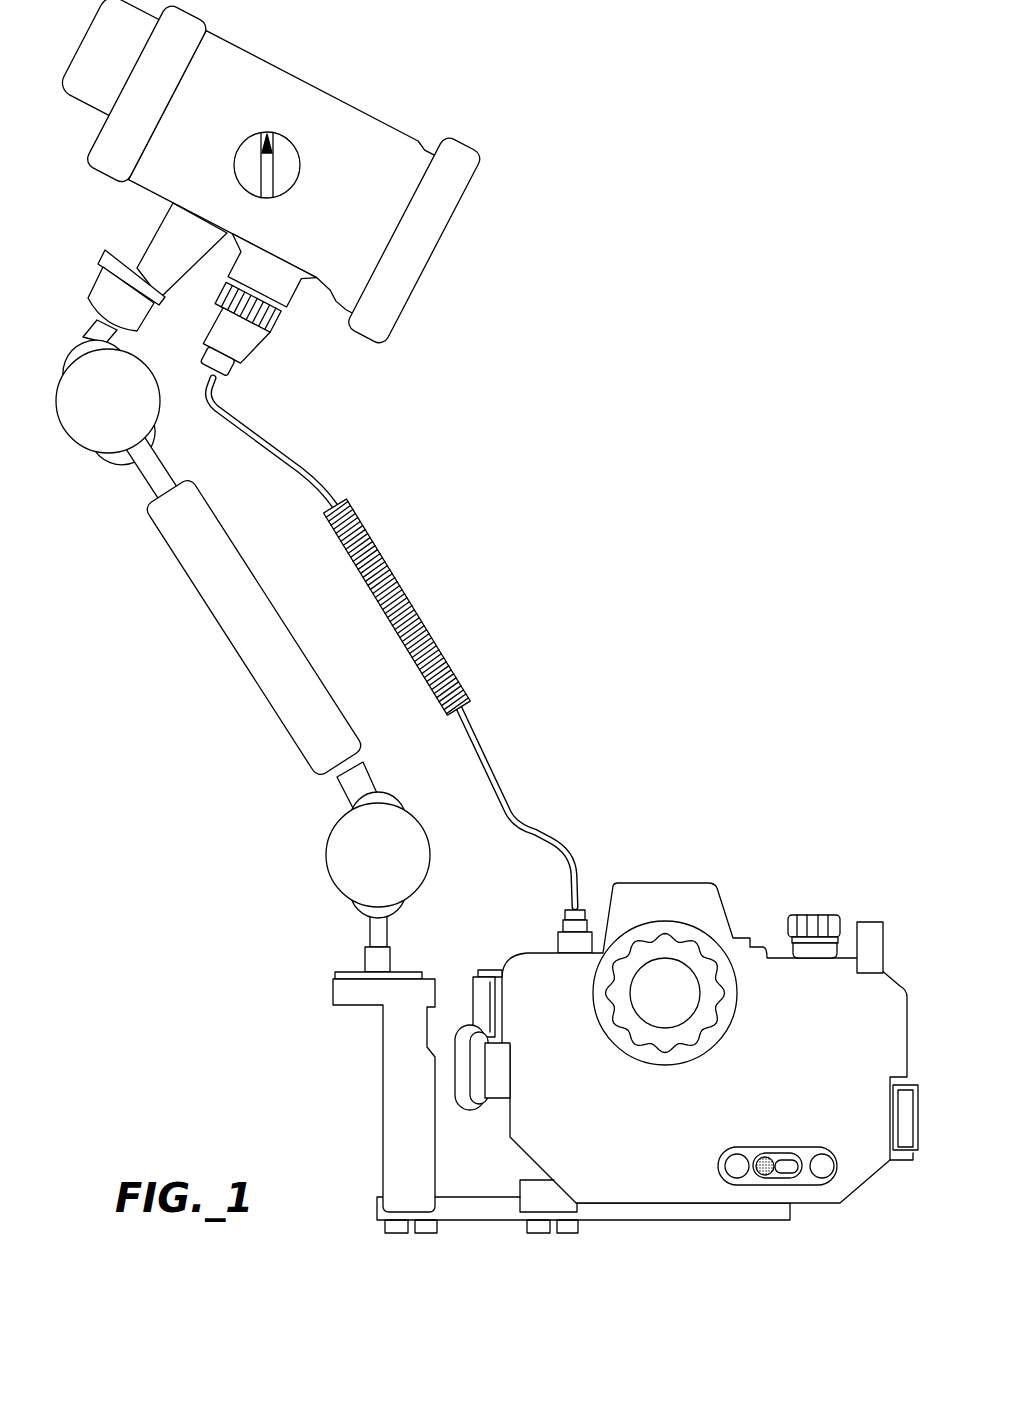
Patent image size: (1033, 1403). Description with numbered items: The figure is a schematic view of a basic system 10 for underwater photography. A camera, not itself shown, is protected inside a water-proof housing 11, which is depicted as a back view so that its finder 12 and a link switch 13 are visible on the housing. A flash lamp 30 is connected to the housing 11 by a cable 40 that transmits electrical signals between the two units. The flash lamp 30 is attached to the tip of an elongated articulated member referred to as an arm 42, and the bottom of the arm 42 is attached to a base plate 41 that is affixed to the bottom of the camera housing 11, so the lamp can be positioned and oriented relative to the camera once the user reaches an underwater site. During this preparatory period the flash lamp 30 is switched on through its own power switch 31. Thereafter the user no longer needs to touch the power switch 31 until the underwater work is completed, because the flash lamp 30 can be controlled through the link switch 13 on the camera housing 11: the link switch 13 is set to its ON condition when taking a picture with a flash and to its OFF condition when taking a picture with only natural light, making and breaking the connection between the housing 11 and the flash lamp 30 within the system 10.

The system 10 is at (470, 616).
The housing 11 is at (686, 1014).
The finder 12 is at (665, 982).
The link switch 13 is at (775, 1148).
The flash lamp 30 is at (223, 80).
The power switch 31 is at (302, 179).
The cable 40 is at (311, 488).
The base plate 41 is at (421, 776).
The arm 42 is at (240, 672).